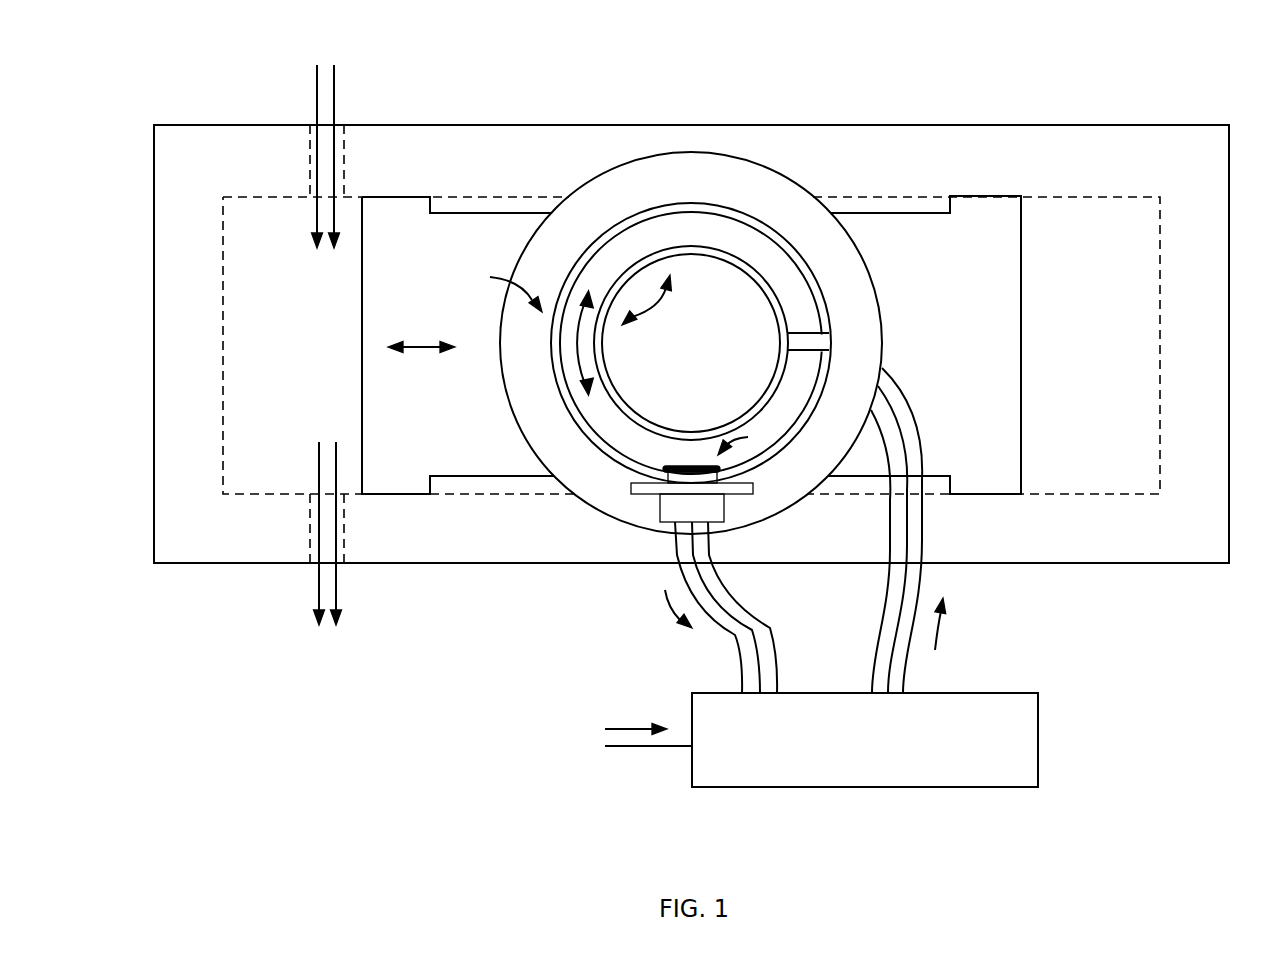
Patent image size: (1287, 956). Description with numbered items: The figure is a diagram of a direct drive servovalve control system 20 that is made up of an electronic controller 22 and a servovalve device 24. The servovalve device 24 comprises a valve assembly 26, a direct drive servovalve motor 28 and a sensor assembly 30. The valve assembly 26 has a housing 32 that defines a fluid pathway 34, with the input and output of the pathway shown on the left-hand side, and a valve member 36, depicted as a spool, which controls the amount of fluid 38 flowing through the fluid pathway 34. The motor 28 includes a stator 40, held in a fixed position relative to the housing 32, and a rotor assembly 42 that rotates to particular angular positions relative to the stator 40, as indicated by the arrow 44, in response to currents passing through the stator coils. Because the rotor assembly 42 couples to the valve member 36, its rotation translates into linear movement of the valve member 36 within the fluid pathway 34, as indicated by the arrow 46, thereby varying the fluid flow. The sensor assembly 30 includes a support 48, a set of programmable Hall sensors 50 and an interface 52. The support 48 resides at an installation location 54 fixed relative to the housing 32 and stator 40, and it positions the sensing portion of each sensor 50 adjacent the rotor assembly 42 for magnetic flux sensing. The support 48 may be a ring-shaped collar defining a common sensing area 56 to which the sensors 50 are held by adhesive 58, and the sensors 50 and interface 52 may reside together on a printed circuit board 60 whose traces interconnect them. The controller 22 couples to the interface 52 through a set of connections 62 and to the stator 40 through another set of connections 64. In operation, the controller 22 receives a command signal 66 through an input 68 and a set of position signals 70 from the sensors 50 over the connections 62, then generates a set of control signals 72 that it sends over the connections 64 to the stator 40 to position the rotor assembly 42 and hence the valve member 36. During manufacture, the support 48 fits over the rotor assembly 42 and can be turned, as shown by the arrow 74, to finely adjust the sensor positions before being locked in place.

The direct drive servovalve control system 20 is at (1178, 808).
The electronic controller 22 is at (853, 750).
The servovalve device 24 is at (1091, 598).
The valve assembly 26 is at (1080, 100).
The direct drive servovalve motor 28 is at (892, 266).
The sensor assembly 30 is at (775, 513).
The housing 32 is at (210, 172).
The fluid pathway 34 is at (274, 358).
The valve member 36 is at (430, 427).
The fluid 38 is at (335, 100).
The stator 40 is at (838, 313).
The rotor assembly 42 is at (678, 353).
The arrow 44 is at (658, 306).
The arrow 46 is at (430, 345).
The support 48 is at (780, 408).
The programmable Hall sensors 50 is at (668, 466).
The interface 52 is at (662, 518).
The installation location 54 is at (502, 289).
The common sensing area 56 is at (747, 438).
The adhesive 58 is at (688, 464).
The printed circuit board 60 is at (760, 485).
The connections 62 is at (769, 598).
The connections 64 is at (859, 645).
The command signal 66 is at (625, 727).
The input 68 is at (668, 750).
The position signals 70 is at (664, 608).
The control signals 72 is at (940, 632).
The arrow 74 is at (568, 365).